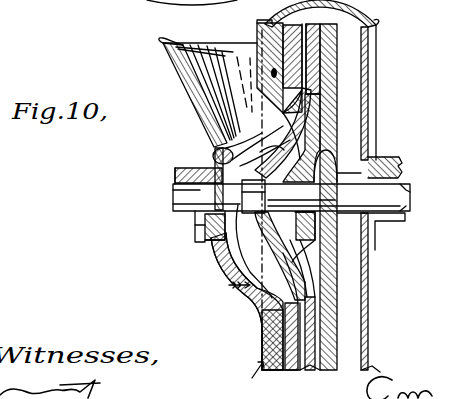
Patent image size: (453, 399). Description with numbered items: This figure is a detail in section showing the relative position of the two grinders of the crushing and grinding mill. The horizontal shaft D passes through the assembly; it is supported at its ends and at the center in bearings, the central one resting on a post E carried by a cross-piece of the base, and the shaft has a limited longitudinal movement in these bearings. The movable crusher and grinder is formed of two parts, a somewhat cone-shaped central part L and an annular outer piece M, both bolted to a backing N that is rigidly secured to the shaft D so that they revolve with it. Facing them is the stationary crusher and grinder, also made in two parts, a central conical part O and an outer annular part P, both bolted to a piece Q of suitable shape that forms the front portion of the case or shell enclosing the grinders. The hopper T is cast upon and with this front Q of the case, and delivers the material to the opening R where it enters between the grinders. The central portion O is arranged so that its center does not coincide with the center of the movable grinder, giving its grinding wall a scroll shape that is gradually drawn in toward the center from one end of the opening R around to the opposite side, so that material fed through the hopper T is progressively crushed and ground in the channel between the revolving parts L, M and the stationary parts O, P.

The backing N is at (335, 186).
The annular outer piece M is at (325, 63).
The central part L is at (303, 263).
The front portion of the case Q is at (281, 66).
The hopper T is at (208, 92).
The opening R is at (256, 139).
The shaft D is at (291, 197).
The post E is at (253, 196).
The central part of stationary grinder O is at (265, 287).
The outer annular part P is at (258, 36).